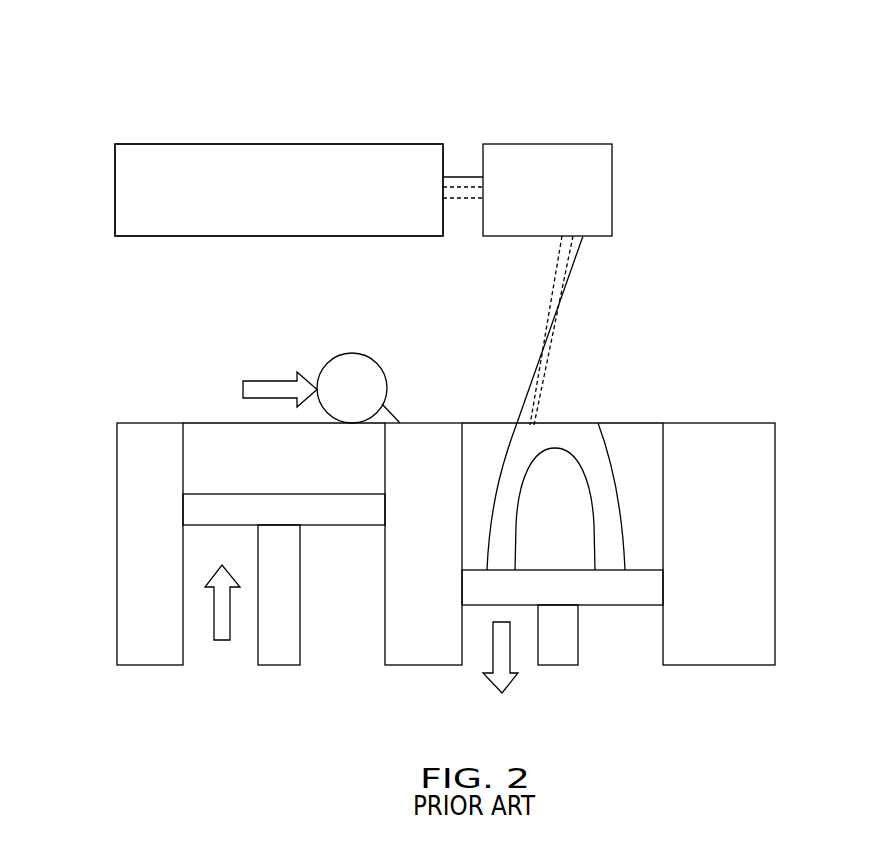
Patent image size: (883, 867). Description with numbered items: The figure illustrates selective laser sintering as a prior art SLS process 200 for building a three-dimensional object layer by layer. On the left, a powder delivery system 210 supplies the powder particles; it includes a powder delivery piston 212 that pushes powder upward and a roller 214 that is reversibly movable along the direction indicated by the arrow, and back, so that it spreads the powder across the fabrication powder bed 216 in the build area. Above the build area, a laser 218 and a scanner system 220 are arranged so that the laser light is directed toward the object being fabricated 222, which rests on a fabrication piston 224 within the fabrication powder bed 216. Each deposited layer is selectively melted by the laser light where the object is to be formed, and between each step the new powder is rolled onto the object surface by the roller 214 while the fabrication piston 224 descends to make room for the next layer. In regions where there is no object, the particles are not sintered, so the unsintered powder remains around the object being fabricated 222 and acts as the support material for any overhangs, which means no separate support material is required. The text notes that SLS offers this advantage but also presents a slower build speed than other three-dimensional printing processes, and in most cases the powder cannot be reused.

The SLS process 200 is at (638, 123).
The powder delivery system 210 is at (227, 427).
The powder delivery piston 212 is at (316, 522).
The roller 214 is at (327, 370).
The fabrication powder bed 216 is at (485, 432).
The laser 218 is at (366, 205).
The scanner system 220 is at (612, 198).
The object being fabricated 222 is at (590, 430).
The fabrication piston 224 is at (608, 602).